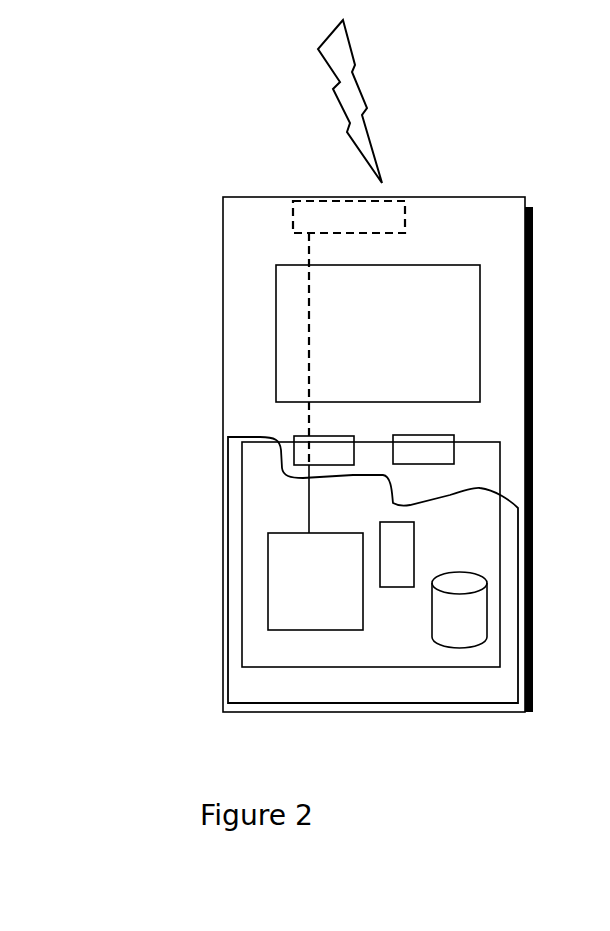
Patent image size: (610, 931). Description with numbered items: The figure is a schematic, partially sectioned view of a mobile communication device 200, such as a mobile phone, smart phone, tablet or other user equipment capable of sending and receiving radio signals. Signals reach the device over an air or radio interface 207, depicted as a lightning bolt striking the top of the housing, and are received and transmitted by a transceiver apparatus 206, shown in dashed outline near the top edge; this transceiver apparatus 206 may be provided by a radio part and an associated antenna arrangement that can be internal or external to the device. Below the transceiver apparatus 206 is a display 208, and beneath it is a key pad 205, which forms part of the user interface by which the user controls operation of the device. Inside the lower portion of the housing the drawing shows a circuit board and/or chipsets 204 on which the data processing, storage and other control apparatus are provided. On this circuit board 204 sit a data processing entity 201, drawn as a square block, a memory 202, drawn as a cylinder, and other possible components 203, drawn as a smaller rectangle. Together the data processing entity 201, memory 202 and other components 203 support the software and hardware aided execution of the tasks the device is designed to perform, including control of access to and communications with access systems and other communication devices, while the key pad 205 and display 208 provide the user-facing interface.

The mobile device 200 is at (223, 240).
The data processing entity 201 is at (275, 565).
The memory 202 is at (452, 622).
The other possible components 203 is at (397, 538).
The circuit board and/or chipsets 204 is at (268, 650).
The key pad 205 is at (298, 450).
The transceiver apparatus 206 is at (395, 210).
The air or radio interface 207 is at (384, 125).
The display 208 is at (292, 320).